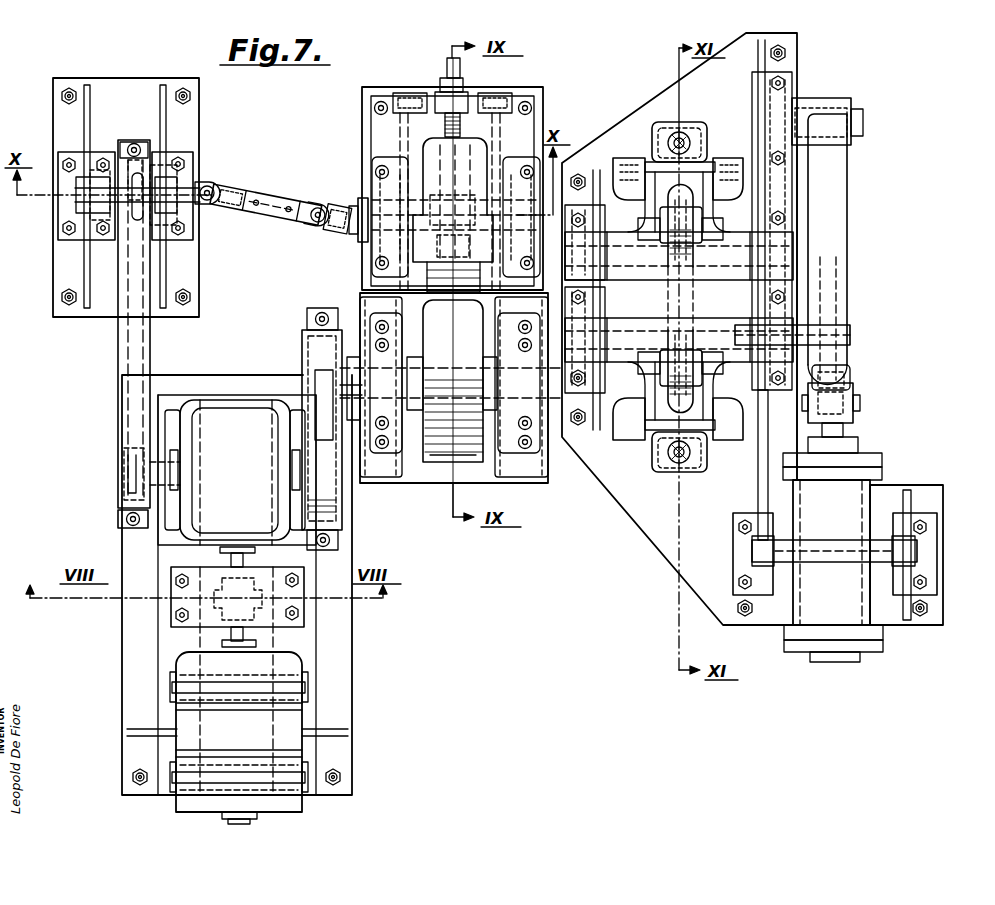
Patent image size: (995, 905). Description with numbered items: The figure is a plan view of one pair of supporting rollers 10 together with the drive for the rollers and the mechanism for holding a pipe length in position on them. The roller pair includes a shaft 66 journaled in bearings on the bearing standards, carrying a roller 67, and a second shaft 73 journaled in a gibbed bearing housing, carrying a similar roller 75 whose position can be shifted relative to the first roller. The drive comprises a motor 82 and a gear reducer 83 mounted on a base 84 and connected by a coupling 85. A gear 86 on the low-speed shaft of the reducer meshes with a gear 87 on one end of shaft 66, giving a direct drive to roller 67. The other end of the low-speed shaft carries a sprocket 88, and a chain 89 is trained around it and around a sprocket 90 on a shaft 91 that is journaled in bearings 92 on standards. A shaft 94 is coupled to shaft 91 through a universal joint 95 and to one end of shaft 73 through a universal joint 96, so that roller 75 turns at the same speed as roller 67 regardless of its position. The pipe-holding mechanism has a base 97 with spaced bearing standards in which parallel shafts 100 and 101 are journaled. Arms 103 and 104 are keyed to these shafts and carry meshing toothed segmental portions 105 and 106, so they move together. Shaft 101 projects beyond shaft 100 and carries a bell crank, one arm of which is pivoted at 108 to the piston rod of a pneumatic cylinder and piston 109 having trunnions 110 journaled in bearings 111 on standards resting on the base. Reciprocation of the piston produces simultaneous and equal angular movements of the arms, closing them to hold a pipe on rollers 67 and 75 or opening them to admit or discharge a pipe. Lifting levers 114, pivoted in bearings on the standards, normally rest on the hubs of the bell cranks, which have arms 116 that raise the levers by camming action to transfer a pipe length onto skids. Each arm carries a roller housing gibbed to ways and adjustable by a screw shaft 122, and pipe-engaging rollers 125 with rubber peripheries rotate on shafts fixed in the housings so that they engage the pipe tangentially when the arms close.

The pair of supporting rollers 10 is at (578, 516).
The shaft 66 is at (446, 368).
The roller 67 is at (450, 455).
The shaft 73 is at (360, 240).
The roller 75 is at (470, 170).
The motor 82 is at (295, 718).
The gear reducer 83 is at (228, 425).
The base 84 is at (340, 650).
The coupling 85 is at (220, 612).
The gear 86 is at (340, 510).
The gear 87 is at (305, 341).
The sprocket 88 is at (118, 496).
The chain 89 is at (128, 330).
The sprocket 90 is at (130, 165).
The shaft 91 is at (172, 170).
The bearings 92 is at (95, 212).
The shaft 94 is at (254, 200).
The universal joint 95 is at (205, 180).
The universal joint 96 is at (338, 210).
The base 97 is at (648, 518).
The shaft 100 is at (798, 248).
The shaft 101 is at (851, 340).
The arm 103 is at (700, 160).
The arm 104 is at (648, 430).
The toothed segmental portion 105 is at (660, 290).
The toothed segmental portion 106 is at (690, 312).
The pivot 108 is at (861, 405).
The pneumatic cylinder and piston 109 is at (815, 605).
The trunnions 110 is at (752, 562).
The bearings 111 is at (745, 545).
The lifting levers 114 is at (838, 210).
The arms 116 is at (847, 297).
The screw shaft 122 is at (678, 132).
The pipe-engaging rollers 125 is at (670, 190).